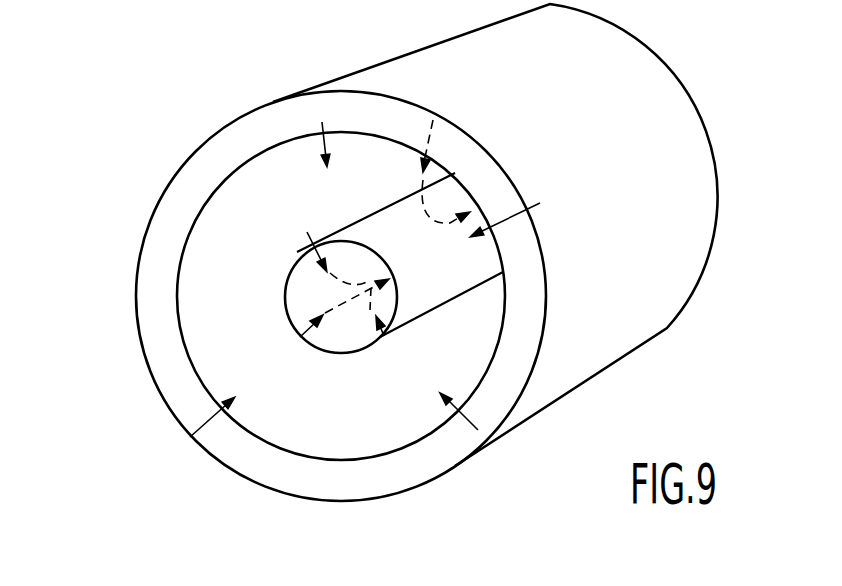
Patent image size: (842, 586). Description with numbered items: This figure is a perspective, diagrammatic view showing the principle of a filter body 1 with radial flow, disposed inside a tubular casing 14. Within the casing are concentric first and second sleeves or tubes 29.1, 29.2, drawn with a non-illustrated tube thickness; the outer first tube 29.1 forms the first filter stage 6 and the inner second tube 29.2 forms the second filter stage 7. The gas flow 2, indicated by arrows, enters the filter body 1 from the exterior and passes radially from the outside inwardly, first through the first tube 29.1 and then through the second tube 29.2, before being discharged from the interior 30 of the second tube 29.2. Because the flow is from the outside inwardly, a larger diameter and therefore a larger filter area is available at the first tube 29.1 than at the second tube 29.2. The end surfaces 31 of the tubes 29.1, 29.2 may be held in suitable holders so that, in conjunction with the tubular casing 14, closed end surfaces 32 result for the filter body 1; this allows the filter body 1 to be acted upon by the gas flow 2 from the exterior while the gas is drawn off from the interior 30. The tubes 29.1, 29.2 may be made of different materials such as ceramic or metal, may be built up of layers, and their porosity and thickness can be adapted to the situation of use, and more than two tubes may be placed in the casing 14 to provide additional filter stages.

The filter body 1 is at (164, 232).
The gas flow 2 is at (208, 424).
The first filter stage 6 is at (383, 458).
The second filter stage 7 is at (476, 260).
The tubular casing 14 is at (138, 286).
The first tube 29.1 is at (208, 195).
The second tube 29.2 is at (356, 236).
The interior 30 is at (373, 253).
The end surfaces 31 is at (167, 378).
The closed end surfaces 32 is at (484, 176).